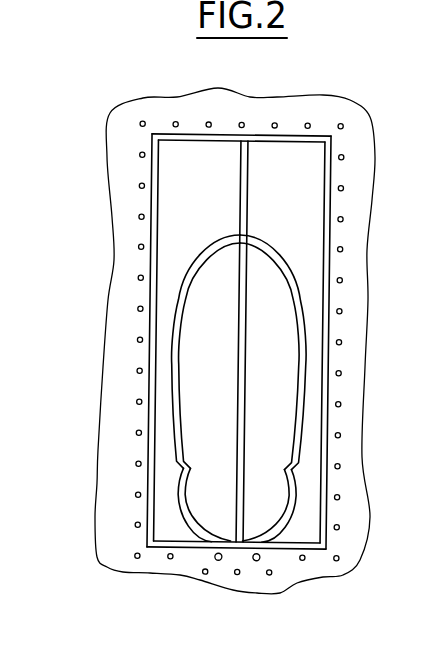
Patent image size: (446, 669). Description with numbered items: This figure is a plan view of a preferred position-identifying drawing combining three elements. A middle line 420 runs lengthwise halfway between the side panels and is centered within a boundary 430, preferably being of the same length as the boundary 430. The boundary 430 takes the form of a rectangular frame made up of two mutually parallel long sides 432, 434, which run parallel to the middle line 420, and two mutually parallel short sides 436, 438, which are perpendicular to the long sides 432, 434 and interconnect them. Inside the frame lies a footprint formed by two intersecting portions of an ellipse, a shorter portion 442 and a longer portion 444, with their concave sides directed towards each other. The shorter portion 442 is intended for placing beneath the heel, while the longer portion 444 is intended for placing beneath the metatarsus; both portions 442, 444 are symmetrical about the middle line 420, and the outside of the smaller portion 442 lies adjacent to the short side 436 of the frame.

The boundary 430 is at (134, 302).
The middle line 420 is at (245, 192).
The long side 432 is at (150, 383).
The long side 434 is at (325, 423).
The short side 436 is at (282, 548).
The short side 438 is at (288, 140).
The shorter elliptical portion 442 is at (185, 510).
The longer elliptical portion 444 is at (303, 323).